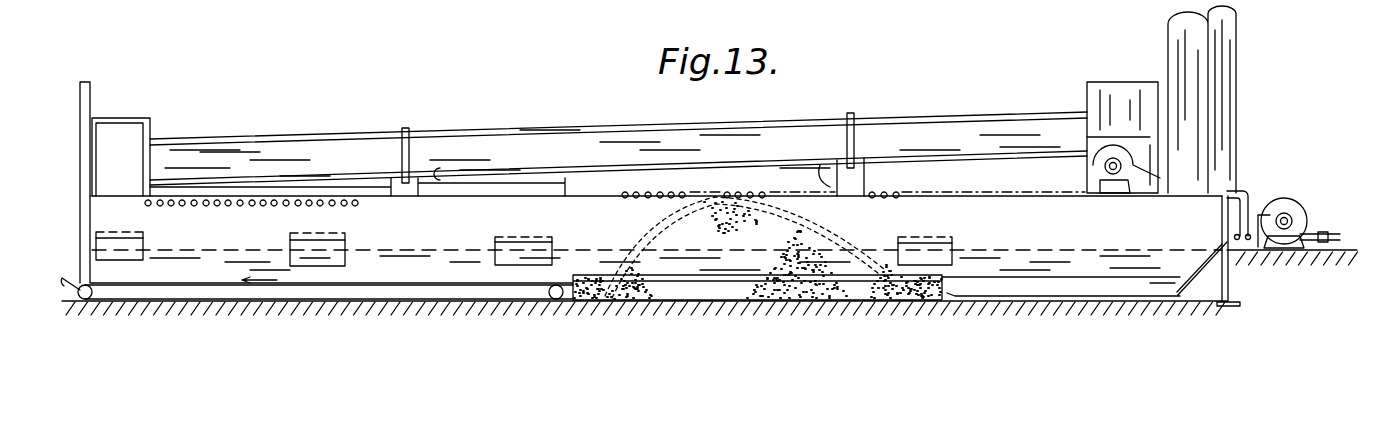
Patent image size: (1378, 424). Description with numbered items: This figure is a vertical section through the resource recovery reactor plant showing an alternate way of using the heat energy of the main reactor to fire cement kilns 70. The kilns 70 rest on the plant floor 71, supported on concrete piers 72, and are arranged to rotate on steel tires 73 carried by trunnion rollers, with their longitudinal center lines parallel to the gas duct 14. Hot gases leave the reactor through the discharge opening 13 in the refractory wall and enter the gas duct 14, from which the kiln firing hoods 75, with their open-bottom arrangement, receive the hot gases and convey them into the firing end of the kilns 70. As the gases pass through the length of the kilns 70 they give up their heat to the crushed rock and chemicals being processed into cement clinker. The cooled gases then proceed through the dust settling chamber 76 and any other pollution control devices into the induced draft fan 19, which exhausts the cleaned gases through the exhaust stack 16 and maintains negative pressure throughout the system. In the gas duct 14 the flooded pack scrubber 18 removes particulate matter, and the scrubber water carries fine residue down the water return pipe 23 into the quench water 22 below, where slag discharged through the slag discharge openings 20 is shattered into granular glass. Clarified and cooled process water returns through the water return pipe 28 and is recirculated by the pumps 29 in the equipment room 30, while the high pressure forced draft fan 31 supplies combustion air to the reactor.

The discharge opening 13 is at (143, 238).
The gas duct 14 is at (1058, 230).
The exhaust stack 16 is at (1168, 55).
The flooded pack scrubber 18 is at (766, 232).
The induced draft fan 19 is at (1098, 135).
The slag discharge openings 20 is at (330, 240).
The water 22 is at (1097, 260).
The water return pipe 23 is at (600, 277).
The water return pipe 28 is at (1325, 236).
The pumps 29 is at (1257, 227).
The equipment room 30 is at (1302, 185).
The high pressure forced draft fan 31 is at (1295, 198).
The cement kilns 70 is at (900, 120).
The plant floor 71 is at (565, 196).
The concrete piers 72 is at (440, 170).
The steel tires 73 is at (405, 128).
The kiln firing hoods 75 is at (143, 118).
The dust settling chamber 76 is at (1105, 82).